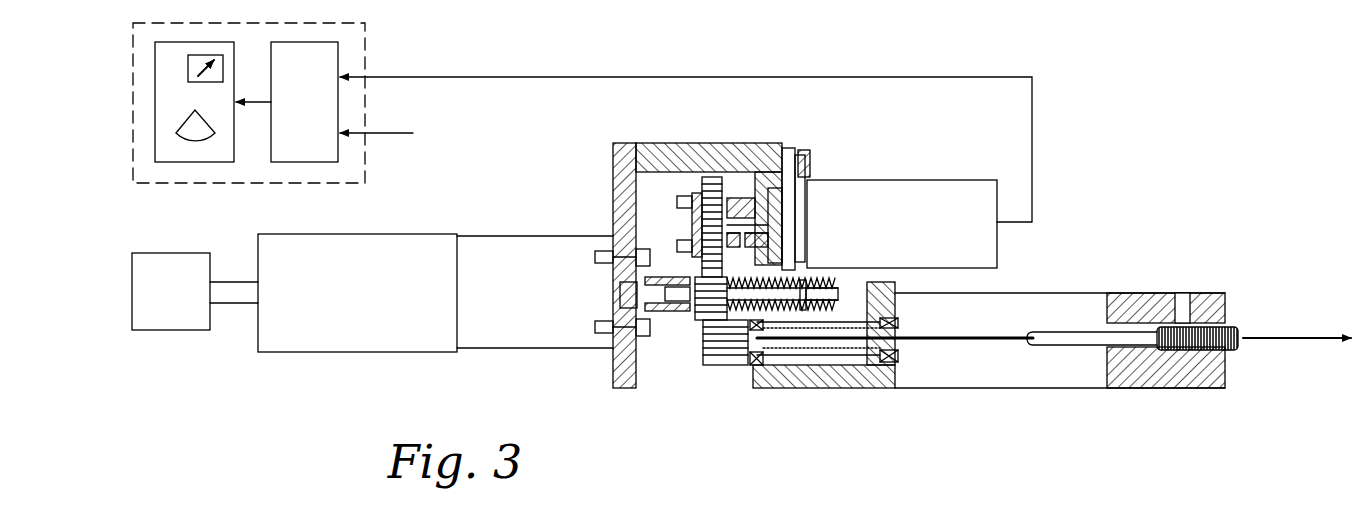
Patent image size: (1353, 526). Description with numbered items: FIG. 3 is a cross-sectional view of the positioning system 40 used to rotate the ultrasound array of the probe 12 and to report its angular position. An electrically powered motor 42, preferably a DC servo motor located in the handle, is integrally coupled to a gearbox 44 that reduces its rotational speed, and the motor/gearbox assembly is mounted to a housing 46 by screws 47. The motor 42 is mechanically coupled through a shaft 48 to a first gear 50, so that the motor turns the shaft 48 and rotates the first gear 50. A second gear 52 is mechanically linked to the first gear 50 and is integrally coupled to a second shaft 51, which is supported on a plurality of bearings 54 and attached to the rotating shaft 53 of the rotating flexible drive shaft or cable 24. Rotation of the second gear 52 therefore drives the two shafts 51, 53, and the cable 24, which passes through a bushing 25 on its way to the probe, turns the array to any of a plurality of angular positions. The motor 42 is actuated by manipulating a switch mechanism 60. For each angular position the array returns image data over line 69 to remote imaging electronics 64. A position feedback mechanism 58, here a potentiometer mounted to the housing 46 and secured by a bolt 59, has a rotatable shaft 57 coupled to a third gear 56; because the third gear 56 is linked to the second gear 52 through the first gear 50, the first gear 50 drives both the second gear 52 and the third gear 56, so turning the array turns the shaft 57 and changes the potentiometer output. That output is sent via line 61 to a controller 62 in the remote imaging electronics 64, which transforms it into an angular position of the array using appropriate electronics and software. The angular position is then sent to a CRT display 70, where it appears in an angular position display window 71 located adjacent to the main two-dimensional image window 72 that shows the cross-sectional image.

The probe assembly 12 is at (812, 0).
The rotating flexible drive shaft 24 is at (1150, 350).
The bushing 25 is at (1145, 293).
The positioning system 40 is at (1133, 196).
The motor 42 is at (340, 300).
The gearbox 44 is at (520, 300).
The housing 46 is at (762, 141).
The screws 47 is at (590, 263).
The shaft 48 is at (665, 325).
The first gear 50 is at (698, 320).
The second shaft 51 is at (950, 342).
The second gear 52 is at (718, 367).
The rotating shaft 53 is at (1062, 348).
The bearings 54 is at (745, 367).
The third gear 56 is at (702, 190).
The rotatable shaft 57 is at (746, 195).
The position feedback mechanism 58 is at (892, 232).
The bolt 59 is at (820, 158).
The switch mechanism 60 is at (158, 300).
The line 61 is at (523, 77).
The controller 62 is at (292, 109).
The remote imaging electronics 64 is at (287, 183).
The line 69 is at (392, 133).
The CRT display 70 is at (185, 162).
The angular position display window 71 is at (188, 63).
The main two-dimensional image window 72 is at (178, 122).